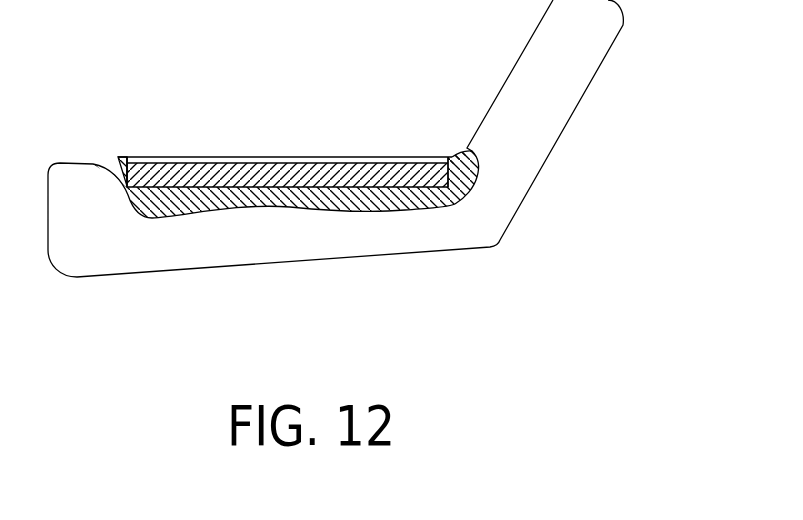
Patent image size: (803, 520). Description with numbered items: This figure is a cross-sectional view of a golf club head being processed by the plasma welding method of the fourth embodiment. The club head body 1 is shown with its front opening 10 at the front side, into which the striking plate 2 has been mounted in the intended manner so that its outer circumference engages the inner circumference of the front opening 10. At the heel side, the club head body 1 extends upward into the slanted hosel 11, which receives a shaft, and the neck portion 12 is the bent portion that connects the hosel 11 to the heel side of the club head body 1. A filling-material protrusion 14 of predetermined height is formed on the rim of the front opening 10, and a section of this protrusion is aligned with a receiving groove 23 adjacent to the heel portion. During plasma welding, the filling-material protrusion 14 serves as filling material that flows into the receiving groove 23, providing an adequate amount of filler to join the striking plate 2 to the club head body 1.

The club head body 1 is at (252, 253).
The striking plate 2 is at (337, 170).
The front opening 10 is at (163, 188).
The hosel 11 is at (587, 62).
The neck portion 12 is at (477, 147).
The filling-material protrusion 14 is at (122, 158).
The receiving groove 23 is at (132, 158).